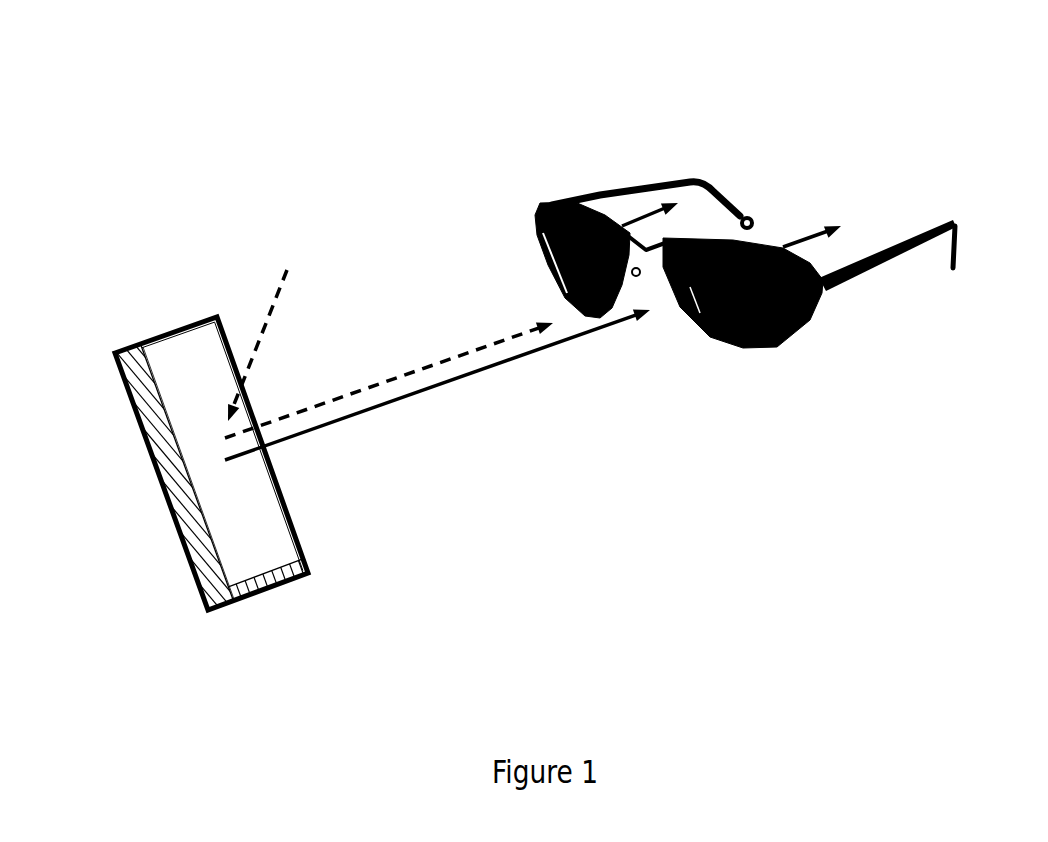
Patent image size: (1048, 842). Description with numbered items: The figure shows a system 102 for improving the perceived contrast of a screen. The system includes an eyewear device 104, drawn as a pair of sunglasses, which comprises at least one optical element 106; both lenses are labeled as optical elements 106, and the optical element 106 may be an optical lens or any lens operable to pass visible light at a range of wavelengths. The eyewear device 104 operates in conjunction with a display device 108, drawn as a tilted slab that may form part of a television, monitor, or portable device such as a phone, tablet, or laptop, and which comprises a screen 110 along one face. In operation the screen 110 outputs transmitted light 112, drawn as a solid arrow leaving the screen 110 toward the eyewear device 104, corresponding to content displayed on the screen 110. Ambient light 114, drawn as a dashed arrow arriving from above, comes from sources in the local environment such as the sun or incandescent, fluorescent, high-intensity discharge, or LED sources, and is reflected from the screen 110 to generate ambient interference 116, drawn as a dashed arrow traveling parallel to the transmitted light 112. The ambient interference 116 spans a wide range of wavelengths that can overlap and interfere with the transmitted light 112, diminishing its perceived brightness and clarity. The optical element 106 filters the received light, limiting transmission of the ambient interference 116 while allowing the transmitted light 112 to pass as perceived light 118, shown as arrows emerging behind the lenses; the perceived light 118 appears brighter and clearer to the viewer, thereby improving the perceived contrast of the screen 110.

The system 102 is at (340, 68).
The eyewear device 104 is at (895, 302).
The optical element 106 is at (550, 253).
The display device 108 is at (115, 353).
The screen 110 is at (263, 543).
The transmitted light 112 is at (382, 408).
The ambient light 114 is at (275, 298).
The ambient interference 116 is at (460, 353).
The perceived light 118 is at (647, 210).